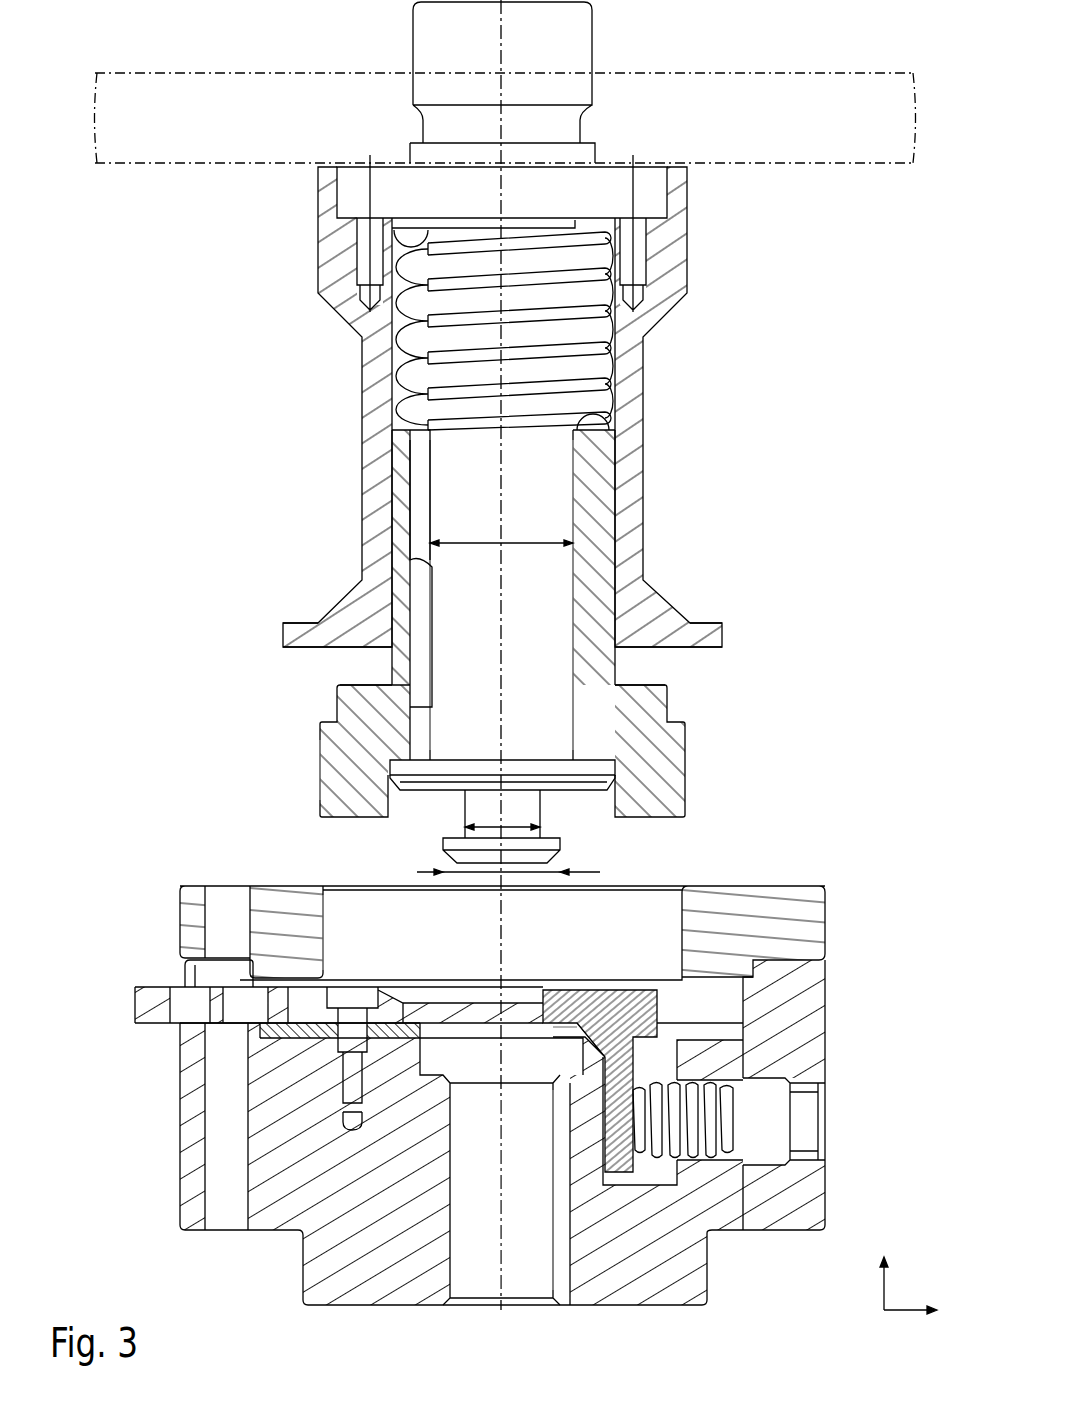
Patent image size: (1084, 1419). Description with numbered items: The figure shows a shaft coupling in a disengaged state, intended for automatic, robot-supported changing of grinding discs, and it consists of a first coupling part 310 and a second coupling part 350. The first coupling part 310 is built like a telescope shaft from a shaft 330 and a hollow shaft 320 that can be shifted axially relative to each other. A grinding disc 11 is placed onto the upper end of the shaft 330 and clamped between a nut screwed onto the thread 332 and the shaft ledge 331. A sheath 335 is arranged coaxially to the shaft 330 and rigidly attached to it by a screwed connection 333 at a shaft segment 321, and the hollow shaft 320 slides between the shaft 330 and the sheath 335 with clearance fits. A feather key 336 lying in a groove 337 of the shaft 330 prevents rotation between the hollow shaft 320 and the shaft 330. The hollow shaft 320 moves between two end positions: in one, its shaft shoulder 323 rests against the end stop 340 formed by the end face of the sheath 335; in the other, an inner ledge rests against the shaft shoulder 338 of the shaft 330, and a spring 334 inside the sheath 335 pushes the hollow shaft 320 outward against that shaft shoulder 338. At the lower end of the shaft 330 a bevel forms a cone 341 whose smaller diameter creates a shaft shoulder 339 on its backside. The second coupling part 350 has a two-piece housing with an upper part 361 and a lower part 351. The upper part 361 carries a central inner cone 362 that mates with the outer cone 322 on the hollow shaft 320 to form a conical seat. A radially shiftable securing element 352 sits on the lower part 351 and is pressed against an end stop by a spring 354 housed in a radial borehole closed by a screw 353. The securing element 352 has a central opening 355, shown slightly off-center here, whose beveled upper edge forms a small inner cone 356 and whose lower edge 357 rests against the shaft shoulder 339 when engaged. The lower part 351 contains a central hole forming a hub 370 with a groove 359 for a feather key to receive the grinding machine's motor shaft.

The grinding disc 11 is at (213, 170).
The first coupling part 310 is at (262, 328).
The hollow shaft 320 is at (610, 665).
The shaft segment 321 is at (340, 750).
The outer cone 322 is at (323, 782).
The shaft shoulder 323 is at (392, 684).
The shaft 330 is at (555, 478).
The shaft ledge 331 is at (652, 198).
The thread 332 is at (415, 52).
The screwed connection 333 is at (636, 256).
The spring 334 is at (430, 418).
The sheath 335 is at (628, 437).
The feather key 336 is at (420, 585).
The groove 337 is at (418, 500).
The shaft shoulder 338 is at (598, 758).
The shaft shoulder 339 is at (548, 832).
The end stop 340 is at (300, 650).
The cone 341 is at (445, 858).
The second coupling part 350 is at (905, 852).
The lower part 351 is at (502, 1132).
The securing element 352 is at (640, 1017).
The screw 353 is at (780, 1120).
The spring 354 is at (663, 1150).
The opening 355 is at (468, 1013).
The inner cone 356 is at (553, 997).
The edge 357 is at (555, 1027).
The groove 359 is at (560, 1240).
The upper part 361 is at (502, 936).
The inner cone 362 is at (322, 945).
The hub 370 is at (510, 1277).